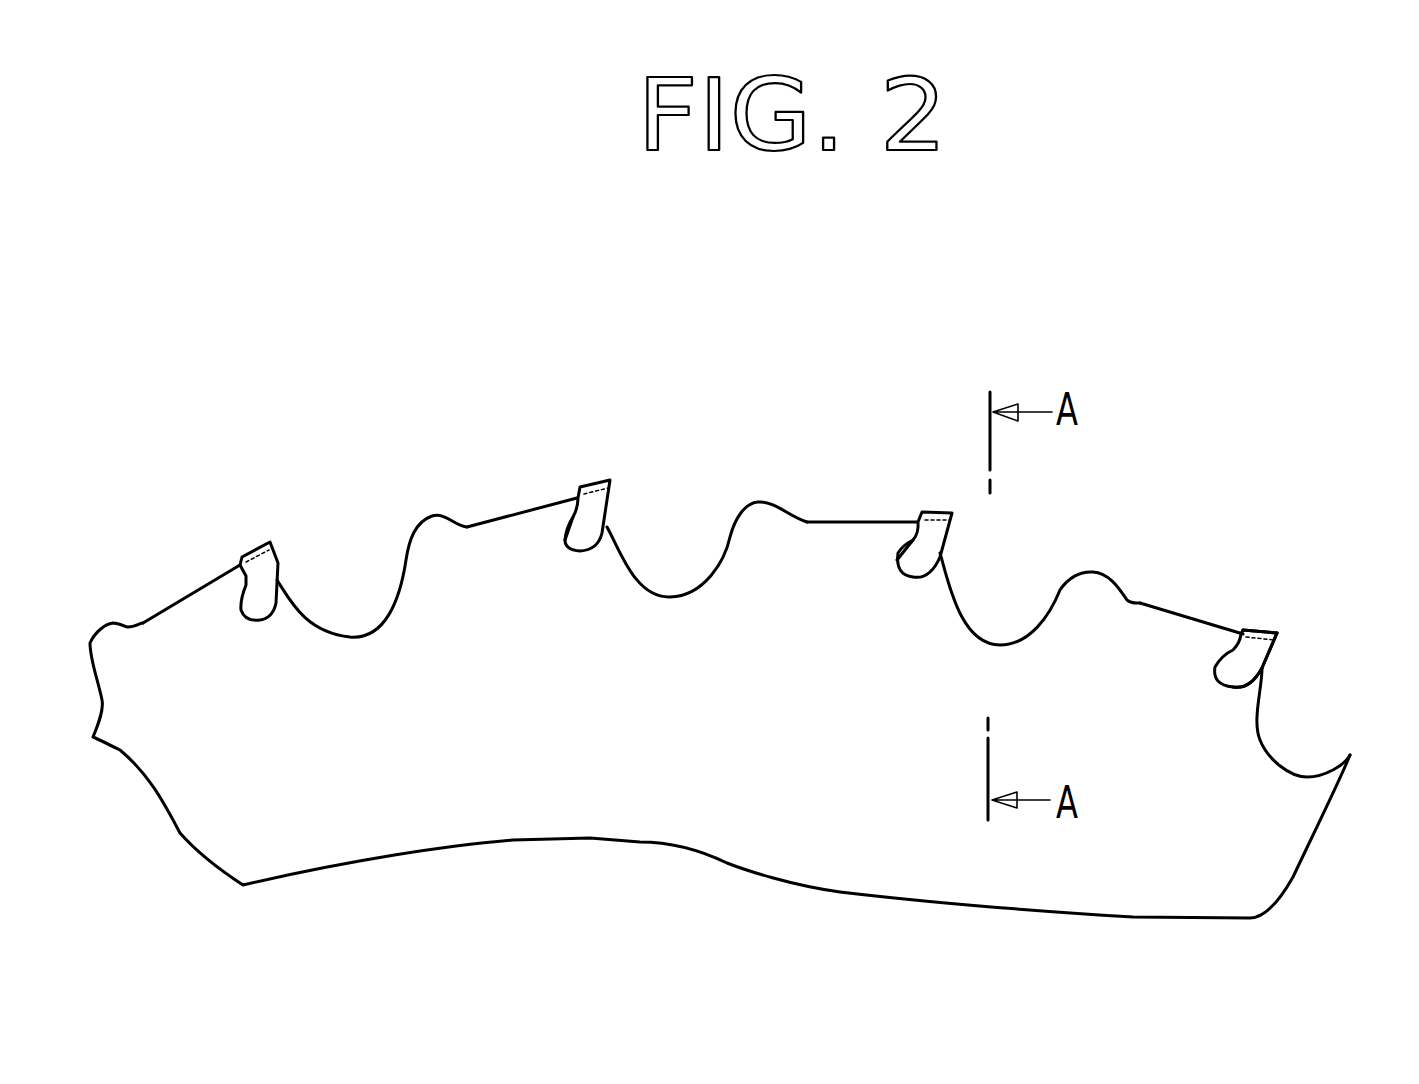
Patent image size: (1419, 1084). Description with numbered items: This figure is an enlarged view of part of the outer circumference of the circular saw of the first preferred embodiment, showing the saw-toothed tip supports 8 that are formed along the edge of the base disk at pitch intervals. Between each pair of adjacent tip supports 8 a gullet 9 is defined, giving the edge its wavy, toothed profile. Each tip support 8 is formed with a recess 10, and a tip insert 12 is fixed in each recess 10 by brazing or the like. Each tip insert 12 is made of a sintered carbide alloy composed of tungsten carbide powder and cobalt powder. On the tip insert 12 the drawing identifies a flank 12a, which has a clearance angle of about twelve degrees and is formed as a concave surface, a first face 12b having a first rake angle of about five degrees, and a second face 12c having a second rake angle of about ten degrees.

The tip support 8 is at (178, 620).
The gullet 9 is at (352, 636).
The recess 10 is at (570, 500).
The tip insert 12 is at (253, 548).
The flank 12a is at (1257, 630).
The first face 12b is at (1277, 640).
The second face 12c is at (1265, 667).